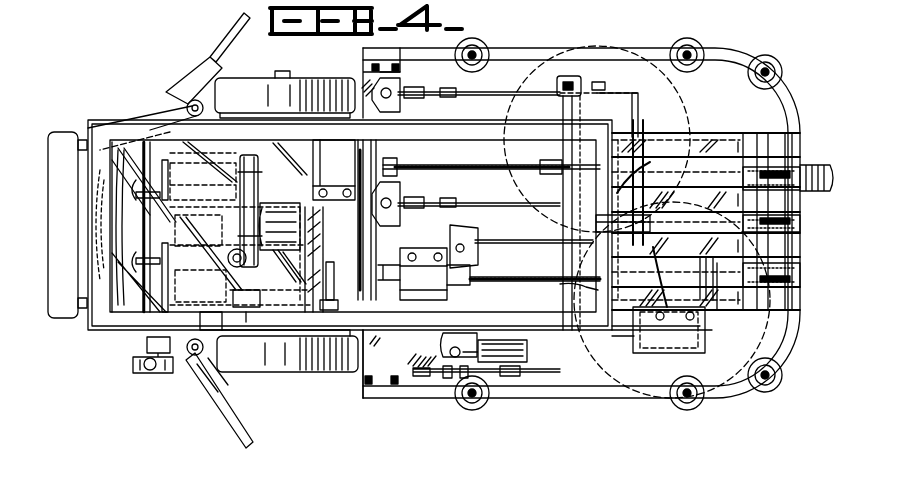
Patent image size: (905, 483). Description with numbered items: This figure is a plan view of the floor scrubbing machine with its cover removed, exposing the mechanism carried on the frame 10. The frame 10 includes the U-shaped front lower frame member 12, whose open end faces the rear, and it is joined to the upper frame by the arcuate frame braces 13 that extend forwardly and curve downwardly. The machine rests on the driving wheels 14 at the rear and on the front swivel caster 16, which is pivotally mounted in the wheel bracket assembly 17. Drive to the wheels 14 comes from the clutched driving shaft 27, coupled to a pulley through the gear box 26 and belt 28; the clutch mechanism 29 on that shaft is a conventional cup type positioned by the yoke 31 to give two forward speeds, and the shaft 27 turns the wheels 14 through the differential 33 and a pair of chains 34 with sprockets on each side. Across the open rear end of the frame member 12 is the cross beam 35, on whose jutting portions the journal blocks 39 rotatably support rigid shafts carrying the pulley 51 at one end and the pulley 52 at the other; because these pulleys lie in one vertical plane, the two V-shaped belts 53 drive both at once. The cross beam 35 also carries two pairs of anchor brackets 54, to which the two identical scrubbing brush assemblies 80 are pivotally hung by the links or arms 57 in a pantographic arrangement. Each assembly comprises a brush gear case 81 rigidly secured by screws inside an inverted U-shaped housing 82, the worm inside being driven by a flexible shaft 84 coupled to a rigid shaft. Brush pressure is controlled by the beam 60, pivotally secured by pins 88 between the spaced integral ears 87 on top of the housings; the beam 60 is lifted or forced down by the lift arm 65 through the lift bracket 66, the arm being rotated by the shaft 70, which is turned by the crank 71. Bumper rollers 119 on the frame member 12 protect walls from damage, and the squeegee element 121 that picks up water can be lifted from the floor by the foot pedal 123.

The frame 10 is at (120, 138).
The front lower frame member 12 is at (733, 58).
The arcuate frame braces 13 is at (700, 152).
The driving wheels 14 is at (296, 96).
The front swivel caster 16 is at (812, 174).
The wheel bracket assembly 17 is at (790, 206).
The gear box 26 is at (167, 200).
The clutched driving shaft 27 is at (200, 322).
The belt 28 is at (252, 160).
The clutch mechanism 29 is at (143, 338).
The yoke 31 is at (278, 254).
The differential 33 is at (334, 277).
The chains 34 is at (336, 296).
The cross beam 35 is at (371, 366).
The journal blocks 39 is at (330, 150).
The pulley 51 is at (396, 166).
The pulley 52 is at (383, 268).
The V-shaped belts 53 is at (366, 222).
The anchor brackets 54 is at (396, 92).
The links or arms 57 is at (480, 98).
The beam 60 is at (618, 194).
The lift arm 65 is at (562, 286).
The lift bracket 66 is at (650, 228).
The shaft 70 is at (552, 100).
The crank 71 is at (580, 86).
The scrubbing brush assemblies 80 is at (614, 70).
The brush gear case 81 is at (640, 122).
The inverted U-shaped housing 82 is at (622, 116).
The flexible shaft 84 is at (470, 168).
The integral ears 87 is at (660, 314).
The pins 88 is at (690, 312).
The bumper rollers 119 is at (691, 50).
The squeegee element 121 is at (205, 66).
The foot pedal 123 is at (62, 136).